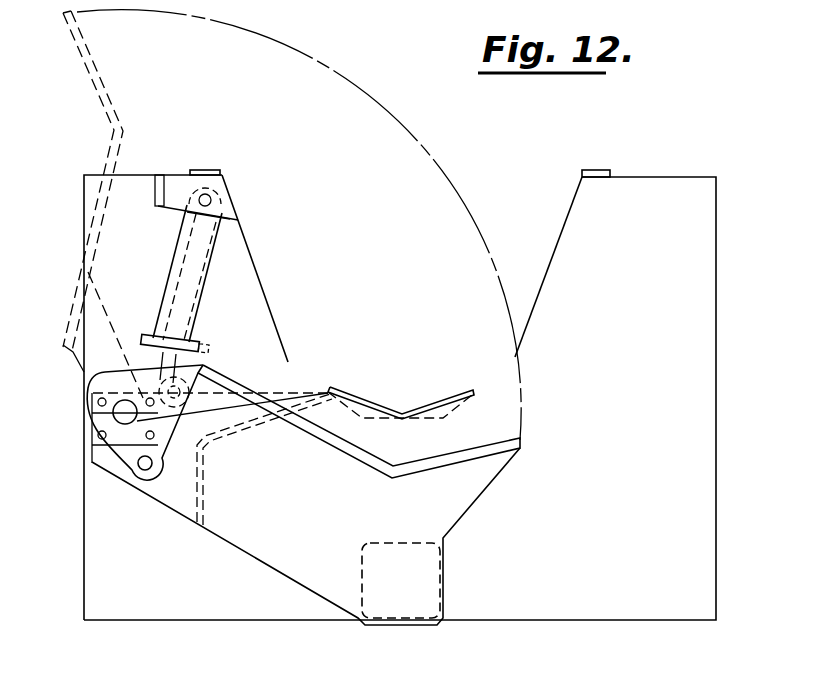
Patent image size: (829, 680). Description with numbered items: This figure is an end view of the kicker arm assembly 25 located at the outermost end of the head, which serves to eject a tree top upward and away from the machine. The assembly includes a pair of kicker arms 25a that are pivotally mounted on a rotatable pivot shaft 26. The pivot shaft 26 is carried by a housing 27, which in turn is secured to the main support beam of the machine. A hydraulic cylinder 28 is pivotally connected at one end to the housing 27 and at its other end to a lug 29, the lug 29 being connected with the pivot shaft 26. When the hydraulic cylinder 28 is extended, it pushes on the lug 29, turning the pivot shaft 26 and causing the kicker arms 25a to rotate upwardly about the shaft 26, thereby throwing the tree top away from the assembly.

The kicker arm assembly 25 is at (325, 315).
The kicker arm 25a is at (118, 100).
The pivot shaft 26 is at (84, 378).
The housing 27 is at (247, 246).
The hydraulic cylinder 28 is at (174, 271).
The lug 29 is at (160, 470).